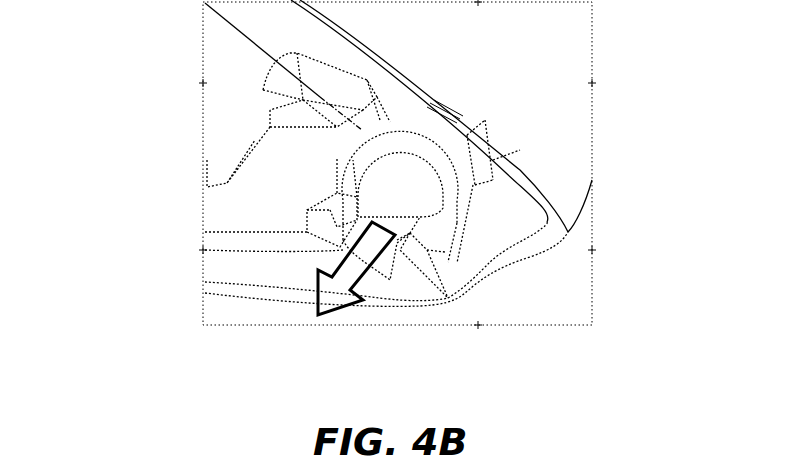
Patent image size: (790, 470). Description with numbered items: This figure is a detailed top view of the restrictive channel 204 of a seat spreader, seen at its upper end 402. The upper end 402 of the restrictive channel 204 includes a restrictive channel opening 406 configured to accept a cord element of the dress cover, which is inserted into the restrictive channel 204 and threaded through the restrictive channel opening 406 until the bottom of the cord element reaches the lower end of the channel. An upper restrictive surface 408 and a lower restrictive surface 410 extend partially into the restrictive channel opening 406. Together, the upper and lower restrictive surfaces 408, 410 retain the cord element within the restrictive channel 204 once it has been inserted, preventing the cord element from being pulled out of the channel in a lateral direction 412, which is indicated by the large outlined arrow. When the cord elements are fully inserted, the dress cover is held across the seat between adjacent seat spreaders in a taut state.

The upper end 402 is at (100, 77).
The restrictive channel opening 406 is at (398, 187).
The upper restrictive surface 408 is at (340, 210).
The restrictive channel 204 is at (233, 271).
The lower restrictive surface 410 is at (407, 250).
The lateral direction 412 is at (340, 293).